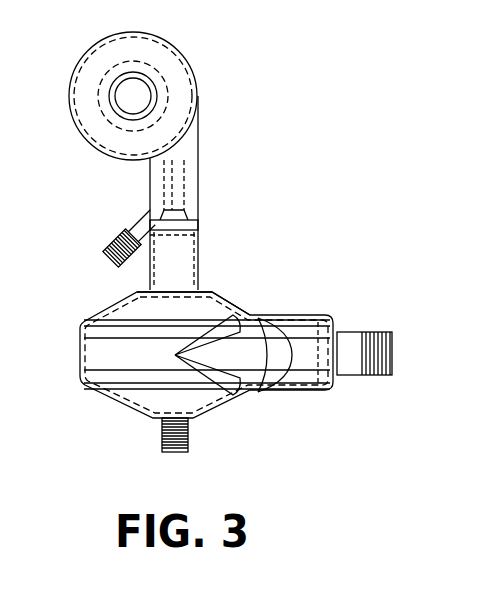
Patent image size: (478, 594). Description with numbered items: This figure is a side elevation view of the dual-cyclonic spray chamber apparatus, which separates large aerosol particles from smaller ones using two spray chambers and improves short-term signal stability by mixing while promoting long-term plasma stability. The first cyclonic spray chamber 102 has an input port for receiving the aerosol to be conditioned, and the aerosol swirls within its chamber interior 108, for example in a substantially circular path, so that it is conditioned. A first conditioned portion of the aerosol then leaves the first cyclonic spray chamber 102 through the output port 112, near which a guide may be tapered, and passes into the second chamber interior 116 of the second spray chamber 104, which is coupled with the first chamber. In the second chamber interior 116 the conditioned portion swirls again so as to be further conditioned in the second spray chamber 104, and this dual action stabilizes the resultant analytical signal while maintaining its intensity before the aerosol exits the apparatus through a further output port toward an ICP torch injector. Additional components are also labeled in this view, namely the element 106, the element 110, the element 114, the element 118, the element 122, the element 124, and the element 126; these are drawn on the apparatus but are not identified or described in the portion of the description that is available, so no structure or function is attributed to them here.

The first cyclonic spray chamber 102 is at (80, 372).
The second spray chamber 104 is at (86, 52).
The outlet fitting 106 is at (392, 332).
The chamber interior 108 is at (226, 294).
The drain fitting 110 is at (190, 437).
The output port 112 is at (150, 197).
The stem tube 114 is at (199, 143).
The second chamber interior 116 is at (112, 125).
The inner ring 118 is at (160, 76).
The central bore 122 is at (137, 97).
The coupling 124 is at (199, 185).
The side fitting 126 is at (108, 258).